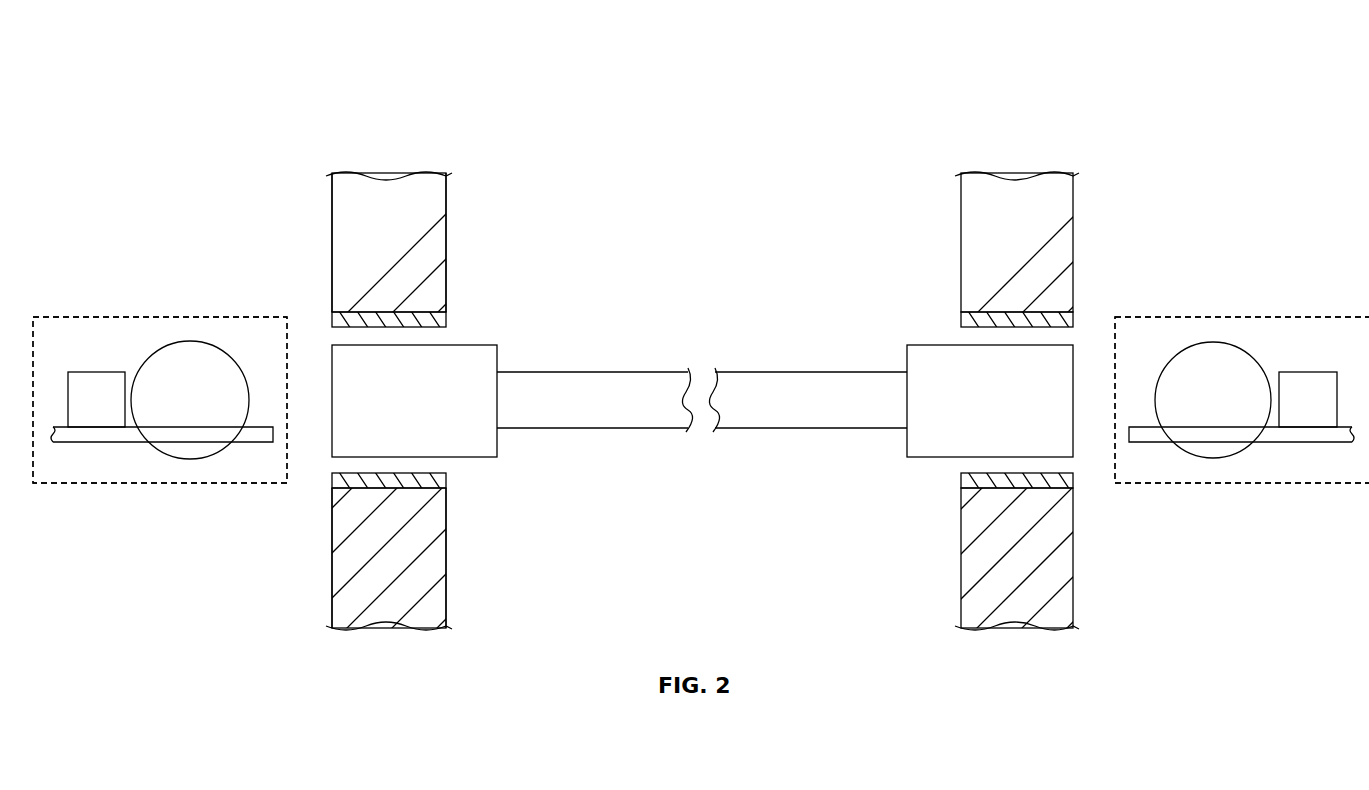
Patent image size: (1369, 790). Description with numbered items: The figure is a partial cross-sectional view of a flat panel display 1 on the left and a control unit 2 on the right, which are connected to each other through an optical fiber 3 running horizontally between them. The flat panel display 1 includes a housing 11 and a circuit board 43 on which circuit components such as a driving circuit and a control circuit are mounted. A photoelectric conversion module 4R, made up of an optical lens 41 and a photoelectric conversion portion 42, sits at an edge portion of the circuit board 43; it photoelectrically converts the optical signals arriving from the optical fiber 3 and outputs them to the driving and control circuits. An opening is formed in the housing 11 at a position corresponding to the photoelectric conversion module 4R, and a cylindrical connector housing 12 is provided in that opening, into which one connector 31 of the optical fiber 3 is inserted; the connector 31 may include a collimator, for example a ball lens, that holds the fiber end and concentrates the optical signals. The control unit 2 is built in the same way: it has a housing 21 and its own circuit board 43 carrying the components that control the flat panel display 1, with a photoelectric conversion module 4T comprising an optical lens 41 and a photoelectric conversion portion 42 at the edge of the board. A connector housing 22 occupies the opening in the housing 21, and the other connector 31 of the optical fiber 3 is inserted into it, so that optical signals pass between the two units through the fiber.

The flat panel display 1 is at (272, 145).
The control unit 2 is at (1114, 145).
The optical fiber 3 is at (782, 429).
The housing 11 is at (446, 212).
The connector housing 12 is at (446, 322).
The housing 21 is at (961, 220).
The connector housing 22 is at (961, 322).
The connector 31 is at (498, 362).
The optical lens 41 is at (190, 341).
The photoelectric conversion portion 42 is at (97, 372).
The circuit board 43 is at (134, 443).
The photoelectric conversion module 4R is at (237, 485).
The photoelectric conversion module 4T is at (1170, 485).